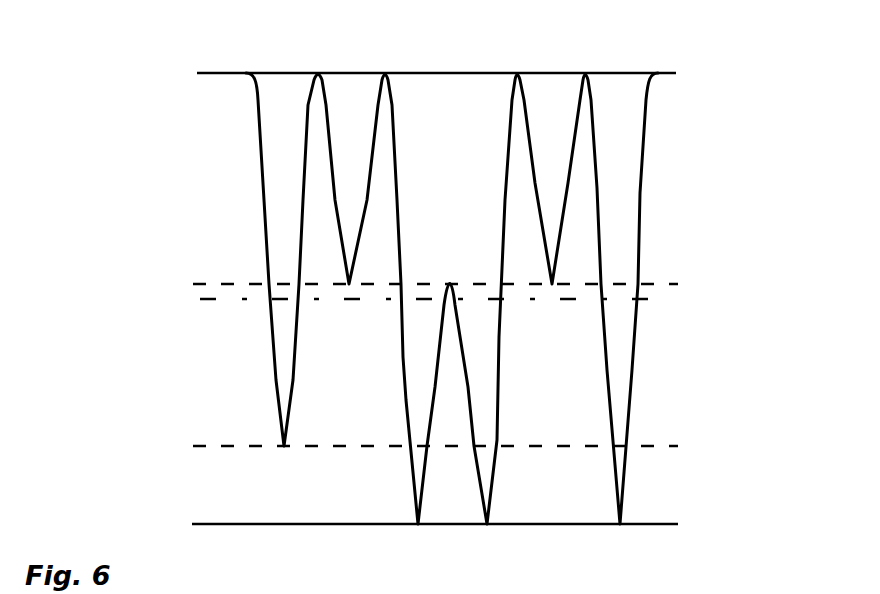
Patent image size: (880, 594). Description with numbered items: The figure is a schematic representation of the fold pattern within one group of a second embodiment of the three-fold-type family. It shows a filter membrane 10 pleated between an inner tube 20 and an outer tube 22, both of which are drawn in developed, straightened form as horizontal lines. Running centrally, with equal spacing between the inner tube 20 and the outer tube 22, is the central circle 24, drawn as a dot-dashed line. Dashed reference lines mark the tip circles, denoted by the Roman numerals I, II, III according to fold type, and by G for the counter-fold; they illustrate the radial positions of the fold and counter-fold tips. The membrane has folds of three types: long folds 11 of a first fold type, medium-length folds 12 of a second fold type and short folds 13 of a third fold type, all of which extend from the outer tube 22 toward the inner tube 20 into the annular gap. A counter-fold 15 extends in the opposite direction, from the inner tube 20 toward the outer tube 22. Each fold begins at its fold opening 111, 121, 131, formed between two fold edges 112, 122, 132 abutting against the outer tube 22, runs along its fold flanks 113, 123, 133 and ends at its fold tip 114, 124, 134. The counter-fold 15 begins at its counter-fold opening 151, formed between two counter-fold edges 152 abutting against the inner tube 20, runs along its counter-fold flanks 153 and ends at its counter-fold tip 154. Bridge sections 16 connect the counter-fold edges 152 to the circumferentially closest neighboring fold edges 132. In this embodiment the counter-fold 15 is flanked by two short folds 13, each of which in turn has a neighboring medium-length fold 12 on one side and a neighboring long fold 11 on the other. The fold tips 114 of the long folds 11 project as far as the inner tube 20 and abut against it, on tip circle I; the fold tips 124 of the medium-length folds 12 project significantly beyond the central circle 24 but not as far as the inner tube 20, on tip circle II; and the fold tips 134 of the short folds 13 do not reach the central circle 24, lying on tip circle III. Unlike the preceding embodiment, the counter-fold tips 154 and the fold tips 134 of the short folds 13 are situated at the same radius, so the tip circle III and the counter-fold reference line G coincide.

The filter membrane 10 is at (276, 369).
The fold of a first fold type 11 is at (615, 131).
The fold of a second fold type 12 is at (284, 340).
The fold of a third fold type 13 is at (550, 194).
The counter-fold 15 is at (451, 312).
The bridge section 16 is at (499, 337).
The inner tube 20 is at (215, 524).
The outer tube 22 is at (197, 73).
The central circle 24 is at (667, 299).
The fold opening 111 is at (627, 92).
The fold edge 112 is at (253, 73).
The fold flank 113 is at (639, 193).
The fold tip 114 is at (620, 524).
The fold opening 121 is at (285, 84).
The fold edge 122 is at (318, 73).
The fold flank 123 is at (264, 199).
The fold tip 124 is at (284, 446).
The fold opening 131 is at (360, 89).
The fold edge 132 is at (385, 73).
The fold flank 133 is at (336, 199).
The fold tip 134 is at (349, 284).
The counter-fold opening 151 is at (460, 498).
The counter-fold edge 152 is at (418, 524).
The counter-fold flank 153 is at (468, 387).
The counter-fold tip 154 is at (451, 282).
The tip circle of the first fold type I is at (665, 524).
The tip circle of the second fold type II is at (668, 446).
The tip circle of the third fold type III is at (643, 283).